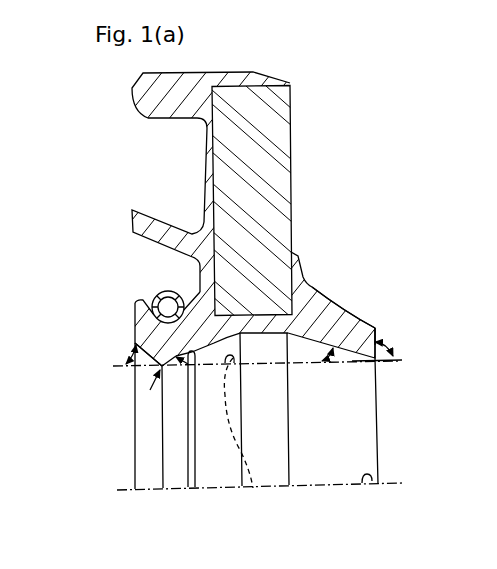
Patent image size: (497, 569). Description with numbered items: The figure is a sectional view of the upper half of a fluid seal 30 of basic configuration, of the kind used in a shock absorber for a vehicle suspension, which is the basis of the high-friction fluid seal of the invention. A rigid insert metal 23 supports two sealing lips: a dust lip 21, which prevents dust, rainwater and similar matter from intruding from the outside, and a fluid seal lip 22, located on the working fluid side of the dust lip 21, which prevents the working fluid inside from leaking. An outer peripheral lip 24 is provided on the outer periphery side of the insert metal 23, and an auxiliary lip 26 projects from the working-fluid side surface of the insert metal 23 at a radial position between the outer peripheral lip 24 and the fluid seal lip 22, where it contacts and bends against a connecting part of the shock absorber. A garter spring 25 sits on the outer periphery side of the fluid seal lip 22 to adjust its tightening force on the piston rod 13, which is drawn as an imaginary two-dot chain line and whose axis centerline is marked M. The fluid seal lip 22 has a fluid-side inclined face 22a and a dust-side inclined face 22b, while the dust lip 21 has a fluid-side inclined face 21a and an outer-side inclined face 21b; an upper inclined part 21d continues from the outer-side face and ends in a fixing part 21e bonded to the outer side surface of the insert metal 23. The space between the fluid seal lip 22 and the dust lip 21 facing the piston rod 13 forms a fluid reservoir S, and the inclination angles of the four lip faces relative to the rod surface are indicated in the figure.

The fluid seal 30 is at (300, 96).
The outer peripheral lip 24 is at (130, 97).
The insert metal 23 is at (291, 133).
The auxiliary lip 26 is at (146, 213).
The garter spring 25 is at (153, 293).
The fluid seal lip 22 is at (150, 390).
The fluid seal lip fluid-side inclined face 22a is at (135, 384).
The fluid seal lip dust-side inclined face 22b is at (155, 390).
The dust lip 21 is at (382, 364).
The dust lip fluid-side inclined face 21a is at (377, 380).
The dust lip outer-side inclined face 21b is at (376, 345).
The upper inclined part 21d is at (332, 299).
The fixing part 21e is at (294, 252).
The piston rod 13 is at (252, 488).
The fluid reservoir S is at (296, 343).
The axis centerline M is at (370, 486).